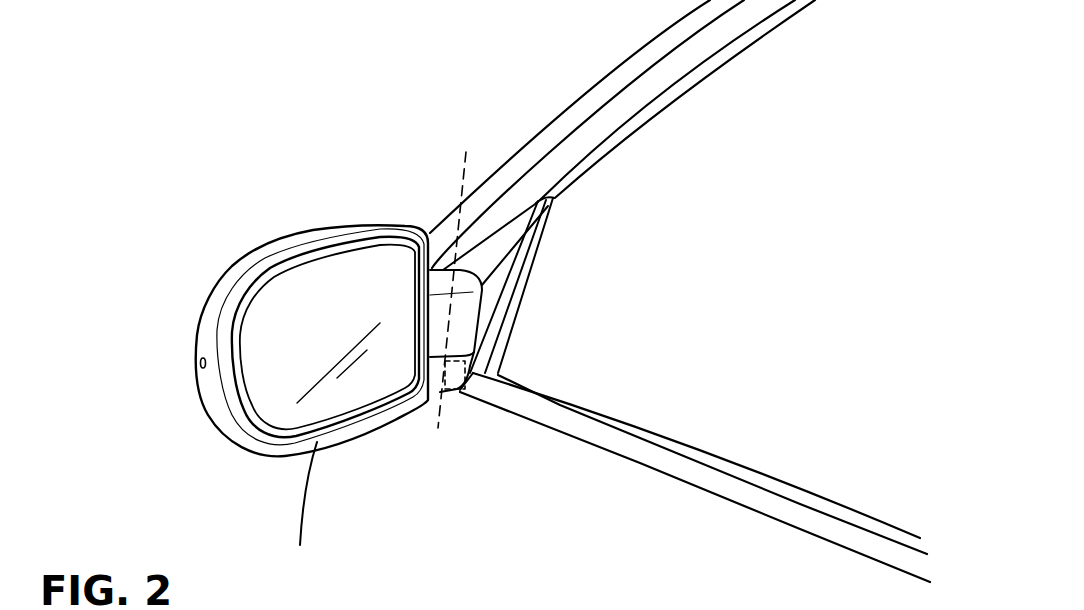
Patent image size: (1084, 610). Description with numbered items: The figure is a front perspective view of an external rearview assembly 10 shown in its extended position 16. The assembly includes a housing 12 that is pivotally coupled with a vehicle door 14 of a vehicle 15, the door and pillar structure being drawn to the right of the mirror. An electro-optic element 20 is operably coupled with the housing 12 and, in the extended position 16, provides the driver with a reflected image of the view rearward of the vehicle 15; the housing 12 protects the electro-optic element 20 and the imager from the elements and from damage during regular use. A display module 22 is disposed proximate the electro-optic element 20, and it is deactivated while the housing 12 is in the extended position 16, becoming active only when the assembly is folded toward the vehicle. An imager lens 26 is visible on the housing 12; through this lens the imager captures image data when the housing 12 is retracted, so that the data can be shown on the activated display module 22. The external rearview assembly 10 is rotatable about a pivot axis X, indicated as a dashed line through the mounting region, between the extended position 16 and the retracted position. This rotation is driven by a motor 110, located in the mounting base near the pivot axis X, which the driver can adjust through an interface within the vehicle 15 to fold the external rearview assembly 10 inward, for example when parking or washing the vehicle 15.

The external rearview assembly 10 is at (260, 328).
The housing 12 is at (232, 273).
The vehicle door 14 is at (641, 521).
The vehicle 15 is at (580, 140).
The extended position 16 is at (243, 465).
The electro-optic element 20 is at (383, 293).
The display module 22 is at (317, 310).
The imager lens 26 is at (196, 362).
The motor 110 is at (460, 393).
The pivot axis X is at (438, 427).